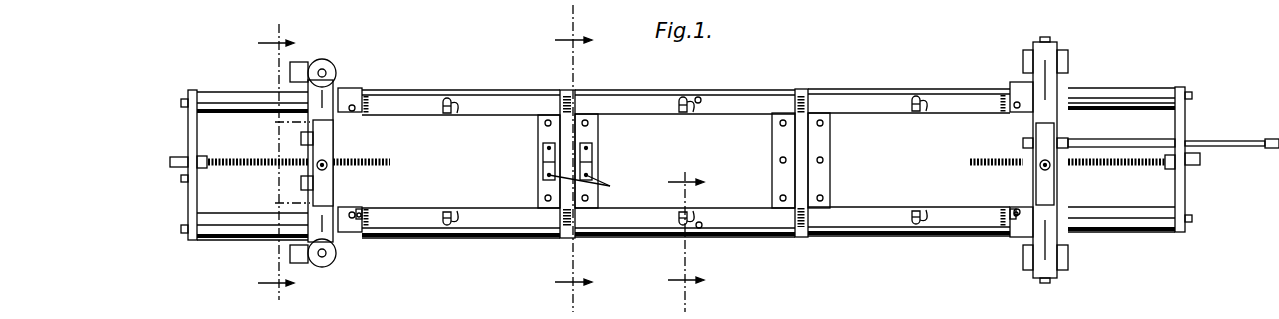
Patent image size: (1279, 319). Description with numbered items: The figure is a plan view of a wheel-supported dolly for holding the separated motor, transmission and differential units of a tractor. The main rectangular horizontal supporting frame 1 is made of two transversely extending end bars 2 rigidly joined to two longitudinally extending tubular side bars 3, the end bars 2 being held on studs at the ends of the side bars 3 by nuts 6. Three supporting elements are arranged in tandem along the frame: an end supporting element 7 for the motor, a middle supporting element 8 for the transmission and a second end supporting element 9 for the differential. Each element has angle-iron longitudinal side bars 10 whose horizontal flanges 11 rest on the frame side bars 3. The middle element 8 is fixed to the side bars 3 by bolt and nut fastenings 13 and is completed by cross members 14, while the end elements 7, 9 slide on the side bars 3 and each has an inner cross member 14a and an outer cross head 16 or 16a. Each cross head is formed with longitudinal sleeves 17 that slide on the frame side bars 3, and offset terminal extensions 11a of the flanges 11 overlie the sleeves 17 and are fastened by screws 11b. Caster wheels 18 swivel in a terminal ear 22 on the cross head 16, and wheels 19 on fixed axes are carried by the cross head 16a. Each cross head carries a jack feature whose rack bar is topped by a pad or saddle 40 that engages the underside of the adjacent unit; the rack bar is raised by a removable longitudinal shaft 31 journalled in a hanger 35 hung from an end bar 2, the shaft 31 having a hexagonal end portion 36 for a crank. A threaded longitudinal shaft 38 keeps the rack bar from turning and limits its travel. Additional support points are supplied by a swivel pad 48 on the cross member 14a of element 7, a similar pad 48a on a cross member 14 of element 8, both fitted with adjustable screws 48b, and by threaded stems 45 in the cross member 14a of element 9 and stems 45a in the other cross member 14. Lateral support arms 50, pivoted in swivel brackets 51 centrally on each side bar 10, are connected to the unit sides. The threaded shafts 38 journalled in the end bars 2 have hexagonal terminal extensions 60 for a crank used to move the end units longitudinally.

The main rectangular horizontal supporting frame 1 is at (188, 92).
The end bars 2 is at (193, 92).
The side bars 3 is at (210, 100).
The nuts 6 is at (1196, 258).
The end supporting element 7 is at (410, 100).
The middle supporting element 8 is at (622, 102).
The end supporting element 9 is at (857, 102).
The longitudinal side bars 10 is at (477, 106).
The horizontal flanges 11 is at (500, 108).
The offset terminal extensions 11a is at (357, 212).
The screws 11b is at (357, 214).
The bolt and nut fastenings 13 is at (700, 97).
The cross members 14 is at (586, 118).
The cross member 14a is at (826, 75).
The cross head 16 is at (343, 96).
The cross head 16a is at (1010, 82).
The longitudinal sleeves 17 is at (352, 94).
The dolly supporting wheels 18 is at (296, 64).
The dolly supporting wheels 19 is at (1062, 263).
The terminal ear 22 is at (336, 54).
The longitudinal shaft 31 is at (1238, 141).
The hanger 35 is at (186, 179).
The flat faced end portion 36 is at (1268, 139).
The threaded longitudinal shaft 38 is at (245, 167).
The pad or saddle 40 is at (330, 143).
The vertical stems 45 is at (820, 124).
The stems 45a is at (783, 124).
The pad 48 is at (543, 162).
The pad 48a is at (592, 162).
The screws 48b is at (597, 182).
The arms 50 is at (446, 112).
The brackets 51 is at (457, 110).
The hexagonal terminal extension 60 is at (172, 160).